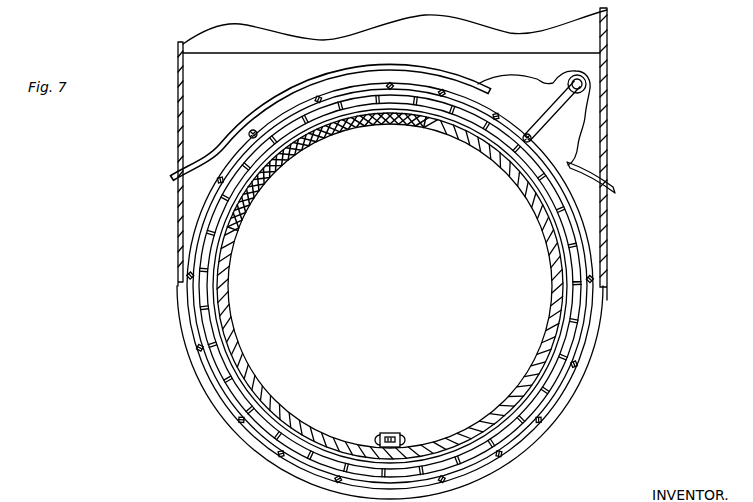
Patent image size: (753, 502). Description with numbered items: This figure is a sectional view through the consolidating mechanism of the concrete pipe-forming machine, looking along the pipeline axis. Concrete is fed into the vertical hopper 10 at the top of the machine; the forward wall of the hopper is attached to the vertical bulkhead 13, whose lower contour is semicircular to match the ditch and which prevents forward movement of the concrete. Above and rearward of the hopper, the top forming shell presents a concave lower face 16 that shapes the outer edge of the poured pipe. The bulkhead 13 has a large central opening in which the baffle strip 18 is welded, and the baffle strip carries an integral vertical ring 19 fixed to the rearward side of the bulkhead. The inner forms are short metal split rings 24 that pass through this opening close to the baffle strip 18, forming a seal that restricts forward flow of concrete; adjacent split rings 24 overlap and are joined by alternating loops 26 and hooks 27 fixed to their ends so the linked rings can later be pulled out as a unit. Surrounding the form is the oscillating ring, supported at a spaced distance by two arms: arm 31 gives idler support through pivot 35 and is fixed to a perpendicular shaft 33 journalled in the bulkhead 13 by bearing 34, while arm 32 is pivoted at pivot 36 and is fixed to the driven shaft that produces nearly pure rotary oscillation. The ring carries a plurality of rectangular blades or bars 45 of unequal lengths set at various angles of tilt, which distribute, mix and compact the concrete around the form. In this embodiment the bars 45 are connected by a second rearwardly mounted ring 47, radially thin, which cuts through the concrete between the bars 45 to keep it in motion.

The vertical hopper 10 is at (608, 36).
The vertical bulkhead 13 is at (591, 182).
The concave lower face 16 is at (193, 172).
The baffle strip 18 is at (567, 290).
The vertical ring 19 is at (566, 331).
The split rings 24 is at (337, 128).
The loops 26 is at (410, 435).
The hooks 27 is at (382, 433).
The arm 31 is at (549, 126).
The arm 32 is at (247, 133).
The perpendicular shaft 33 is at (566, 83).
The bearing 34 is at (578, 106).
The pivot 35 is at (528, 135).
The pivot 36 is at (260, 136).
The blades or bars 45 is at (207, 350).
The second rearwardly mounted ring 47 is at (200, 294).